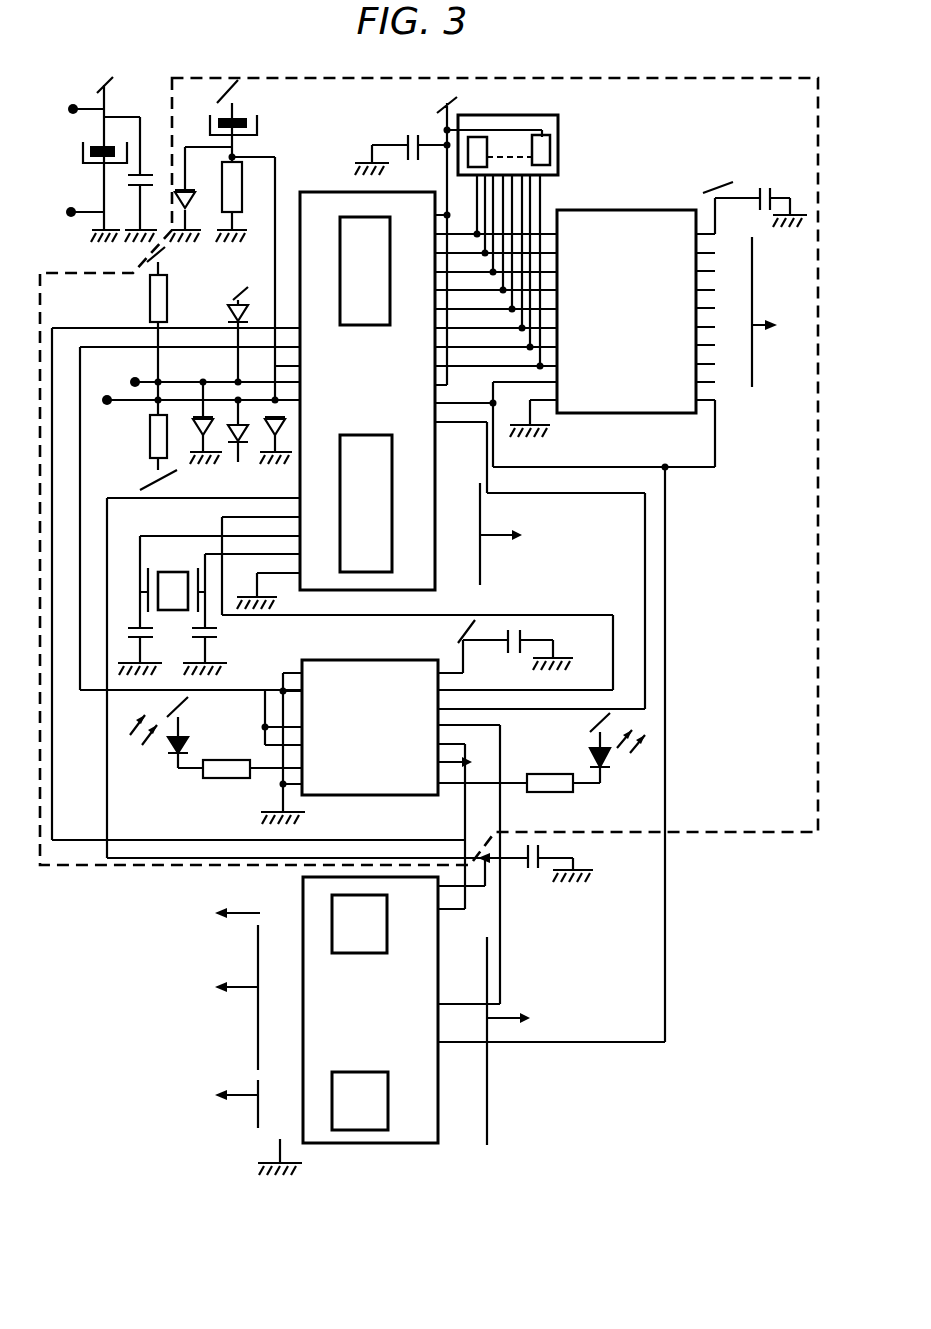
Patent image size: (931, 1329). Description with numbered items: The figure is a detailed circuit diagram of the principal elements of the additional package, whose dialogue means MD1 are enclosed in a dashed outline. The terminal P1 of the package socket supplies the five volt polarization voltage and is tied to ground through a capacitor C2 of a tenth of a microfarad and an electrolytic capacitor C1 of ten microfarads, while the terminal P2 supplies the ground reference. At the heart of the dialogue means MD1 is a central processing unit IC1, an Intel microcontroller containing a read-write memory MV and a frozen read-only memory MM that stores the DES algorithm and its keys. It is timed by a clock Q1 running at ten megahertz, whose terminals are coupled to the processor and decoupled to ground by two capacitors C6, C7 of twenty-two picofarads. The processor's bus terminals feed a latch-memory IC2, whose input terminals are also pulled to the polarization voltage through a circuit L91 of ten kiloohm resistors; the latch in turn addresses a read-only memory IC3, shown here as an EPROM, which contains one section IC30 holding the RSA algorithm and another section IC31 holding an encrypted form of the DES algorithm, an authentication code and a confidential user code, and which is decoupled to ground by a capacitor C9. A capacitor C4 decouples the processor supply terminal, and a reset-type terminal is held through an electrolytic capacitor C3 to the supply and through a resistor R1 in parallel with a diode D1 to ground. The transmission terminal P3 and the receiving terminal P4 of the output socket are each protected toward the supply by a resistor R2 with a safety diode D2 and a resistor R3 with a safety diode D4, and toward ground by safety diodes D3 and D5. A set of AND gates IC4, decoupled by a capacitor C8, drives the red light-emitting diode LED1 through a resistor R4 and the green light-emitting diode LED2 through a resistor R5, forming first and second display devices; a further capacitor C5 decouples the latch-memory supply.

The dialogue means MD1 is at (738, 835).
The terminal P1 is at (73, 109).
The terminal P2 is at (71, 214).
The terminal P3 is at (135, 382).
The terminal P4 is at (106, 405).
The electrolytic capacitor C1 is at (88, 148).
The capacitor C2 is at (150, 176).
The electrolytic capacitor C3 is at (245, 118).
The capacitor C4 is at (406, 138).
The capacitor C5 is at (758, 190).
The capacitor C6 is at (136, 636).
The capacitor C7 is at (212, 636).
The capacitor C8 is at (507, 641).
The capacitor C9 is at (527, 862).
The resistor R1 is at (240, 195).
The resistor R2 is at (150, 305).
The resistor R3 is at (150, 442).
The resistor R4 is at (222, 778).
The resistor R5 is at (557, 794).
The diode D1 is at (197, 210).
The safety diode D2 is at (232, 308).
The safety diode D3 is at (197, 432).
The safety diode D4 is at (240, 446).
The safety diode D5 is at (272, 432).
The clock Q1 is at (174, 572).
The circuit L91 is at (512, 115).
The central processing unit IC1 is at (429, 391).
The latch-memory IC2 is at (684, 305).
The read-only memory IC3 is at (373, 1026).
The set of AND logical gates IC4 is at (370, 727).
The section of memory IC30 is at (359, 924).
The section of memory IC31 is at (360, 1101).
The light-emitting diode LED1 is at (178, 756).
The light-emitting diode LED2 is at (610, 758).
The EPROM label EPROM is at (303, 1138).